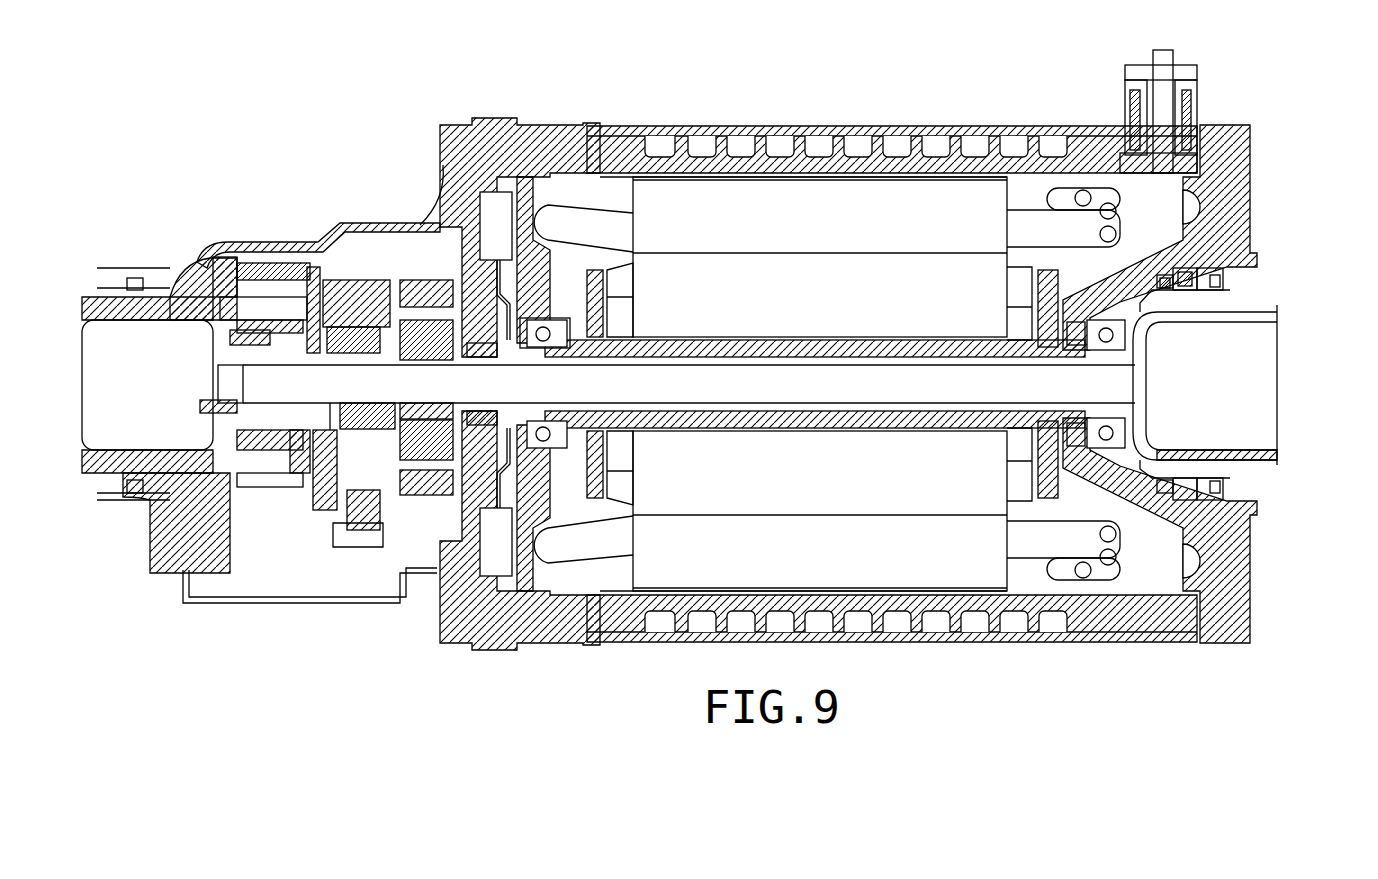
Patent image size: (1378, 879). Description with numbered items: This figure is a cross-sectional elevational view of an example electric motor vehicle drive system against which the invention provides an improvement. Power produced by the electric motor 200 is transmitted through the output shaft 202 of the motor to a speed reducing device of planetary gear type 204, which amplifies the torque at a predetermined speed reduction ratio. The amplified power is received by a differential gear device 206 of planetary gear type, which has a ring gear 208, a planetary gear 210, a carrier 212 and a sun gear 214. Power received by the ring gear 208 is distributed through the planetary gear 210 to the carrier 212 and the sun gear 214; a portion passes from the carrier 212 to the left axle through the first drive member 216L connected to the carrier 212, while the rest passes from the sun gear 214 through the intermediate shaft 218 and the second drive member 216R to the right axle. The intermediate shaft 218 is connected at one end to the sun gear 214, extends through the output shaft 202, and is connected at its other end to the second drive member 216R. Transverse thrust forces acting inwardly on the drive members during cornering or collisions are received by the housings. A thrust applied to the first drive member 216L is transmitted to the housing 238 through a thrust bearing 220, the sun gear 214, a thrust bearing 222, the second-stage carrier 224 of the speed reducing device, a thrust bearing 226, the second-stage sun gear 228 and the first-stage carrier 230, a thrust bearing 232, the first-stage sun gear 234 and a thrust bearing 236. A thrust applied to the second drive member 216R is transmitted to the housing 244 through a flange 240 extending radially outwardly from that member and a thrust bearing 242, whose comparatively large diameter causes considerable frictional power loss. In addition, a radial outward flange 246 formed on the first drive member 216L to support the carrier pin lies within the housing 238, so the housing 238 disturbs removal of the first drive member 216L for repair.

The electric motor 200 is at (962, 90).
The output shaft 202 is at (675, 340).
The speed reducing device of planetary gear type 204 is at (342, 188).
The differential gear device 206 is at (236, 205).
The ring gear 208 is at (248, 300).
The planetary gear 210 is at (197, 300).
The carrier 212 is at (293, 340).
The sun gear 214 is at (243, 333).
The first drive member 216L is at (192, 285).
The second drive member 216R is at (1220, 302).
The intermediate shaft 218 is at (805, 380).
The thrust bearing 220 is at (250, 373).
The thrust bearing 222 is at (292, 380).
The second-stage carrier 224 is at (318, 340).
The thrust bearing 226 is at (330, 380).
The second-stage sun gear 228 is at (362, 330).
The first-stage carrier 230 is at (397, 380).
The thrust bearing 232 is at (430, 420).
The first-stage sun gear 234 is at (427, 283).
The thrust bearing 236 is at (465, 365).
The housing 238 is at (443, 165).
The flange 240 is at (1170, 288).
The thrust bearing 242 is at (1163, 285).
The housing 244 is at (1240, 180).
The radial outward flange 246 is at (200, 528).